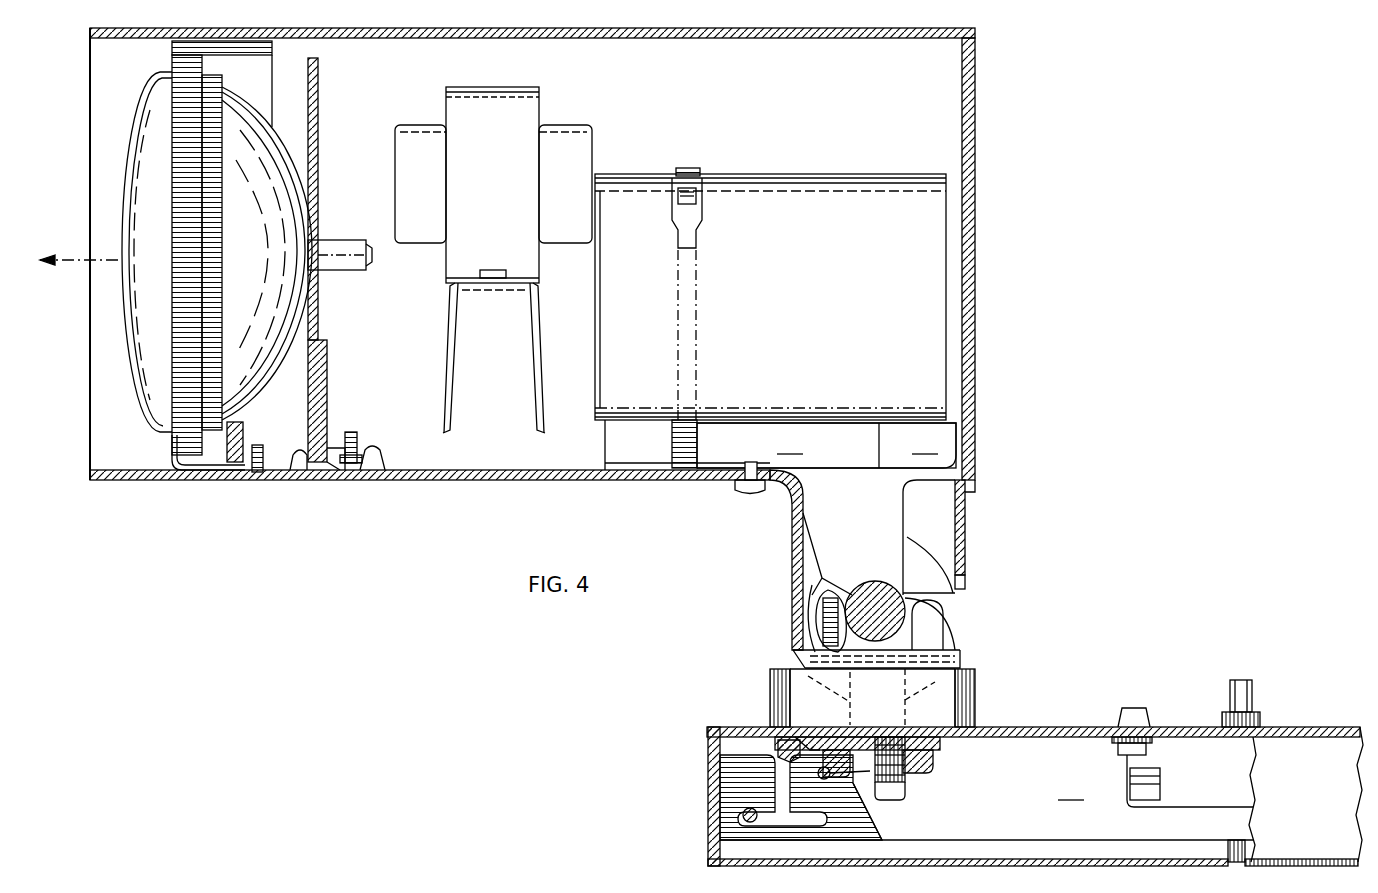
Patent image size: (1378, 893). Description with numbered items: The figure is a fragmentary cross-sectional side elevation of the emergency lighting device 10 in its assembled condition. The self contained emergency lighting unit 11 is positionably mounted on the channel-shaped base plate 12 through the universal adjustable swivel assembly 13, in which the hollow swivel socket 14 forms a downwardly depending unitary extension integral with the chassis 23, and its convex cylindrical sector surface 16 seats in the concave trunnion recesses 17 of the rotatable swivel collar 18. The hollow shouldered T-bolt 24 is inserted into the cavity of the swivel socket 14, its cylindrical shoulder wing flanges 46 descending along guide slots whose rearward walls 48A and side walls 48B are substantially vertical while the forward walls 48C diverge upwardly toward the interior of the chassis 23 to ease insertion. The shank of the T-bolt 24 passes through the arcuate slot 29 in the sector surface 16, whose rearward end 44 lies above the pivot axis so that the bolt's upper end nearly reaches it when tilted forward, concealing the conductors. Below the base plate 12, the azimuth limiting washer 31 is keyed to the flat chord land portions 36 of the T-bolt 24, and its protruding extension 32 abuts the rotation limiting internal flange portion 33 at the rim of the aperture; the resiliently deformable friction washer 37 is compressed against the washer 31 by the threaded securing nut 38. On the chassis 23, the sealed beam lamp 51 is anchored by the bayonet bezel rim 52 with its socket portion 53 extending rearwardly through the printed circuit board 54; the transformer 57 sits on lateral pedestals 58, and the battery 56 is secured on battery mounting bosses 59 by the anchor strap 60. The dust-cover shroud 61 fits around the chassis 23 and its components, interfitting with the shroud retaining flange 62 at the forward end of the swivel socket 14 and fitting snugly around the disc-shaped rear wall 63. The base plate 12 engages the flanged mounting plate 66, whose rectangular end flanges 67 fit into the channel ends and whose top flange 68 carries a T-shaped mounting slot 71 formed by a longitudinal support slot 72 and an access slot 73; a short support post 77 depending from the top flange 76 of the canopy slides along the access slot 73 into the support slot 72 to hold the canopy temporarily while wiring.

The emergency lighting device 10 is at (1108, 268).
The self contained emergency lighting unit 11 is at (300, 484).
The channel-shaped base plate 12 is at (1040, 706).
The universal adjustable swivel assembly 13 is at (1006, 594).
The swivel socket 14 is at (790, 541).
The convex cylindrical sector surface 16 is at (950, 656).
The concave trunnion recesses 17 is at (958, 685).
The rotatable swivel collar 18 is at (770, 686).
The chassis 23 is at (412, 462).
The hollow shouldered T-bolt 24 is at (814, 604).
The arcuate slot 29 is at (958, 620).
The azimuth limiting washer 31 is at (945, 742).
The protruding extension 32 is at (765, 732).
The rotation limiting internal flange portion 33 is at (795, 742).
The flat chord land portions 36 is at (895, 802).
The resiliently deformable friction washer 37 is at (933, 764).
The threaded securing nut 38 is at (906, 782).
The rearward end of slot 44 is at (966, 582).
The cylindrical shoulder wing flanges 46 is at (878, 594).
The rearward walls of guide slots 48A is at (903, 497).
The side walls of guide slots 48B is at (880, 528).
The forward walls of guide slots 48C is at (814, 557).
The sealed beam lamp 51 is at (115, 222).
The bayonet bezel rim 52 is at (172, 50).
The socket portion 53 is at (362, 270).
The printed circuit board 54 is at (318, 78).
The battery 56 is at (810, 175).
The transformer 57 is at (530, 106).
The lateral pedestals 58 is at (480, 352).
The battery mounting bosses 59 is at (640, 452).
The anchor strap 60 is at (688, 172).
The dust-cover shroud 61 is at (500, 30).
The shroud retaining flange 62 is at (736, 488).
The rear wall 63 is at (962, 86).
The flanged mounting plate 66 is at (1070, 866).
The rectangular end flanges 67 is at (708, 834).
The top flange 68 is at (1000, 840).
The T-shaped mounting slot 71 is at (788, 835).
The longitudinal support slot 72 is at (765, 822).
The access slot 73 is at (775, 776).
The top flange of canopy 76 is at (1071, 789).
The support post 77 is at (743, 815).